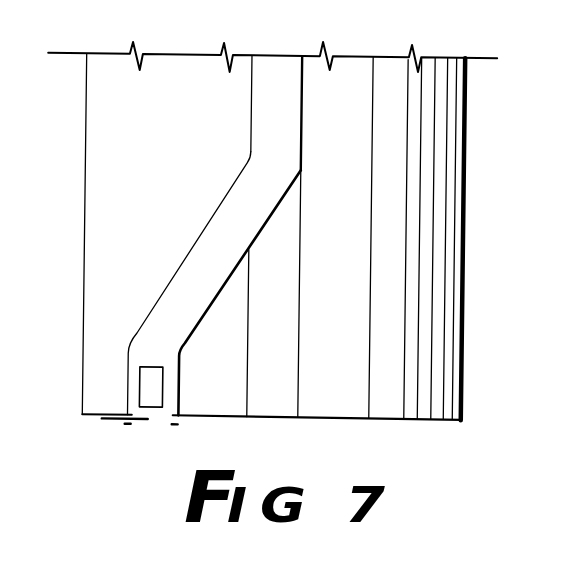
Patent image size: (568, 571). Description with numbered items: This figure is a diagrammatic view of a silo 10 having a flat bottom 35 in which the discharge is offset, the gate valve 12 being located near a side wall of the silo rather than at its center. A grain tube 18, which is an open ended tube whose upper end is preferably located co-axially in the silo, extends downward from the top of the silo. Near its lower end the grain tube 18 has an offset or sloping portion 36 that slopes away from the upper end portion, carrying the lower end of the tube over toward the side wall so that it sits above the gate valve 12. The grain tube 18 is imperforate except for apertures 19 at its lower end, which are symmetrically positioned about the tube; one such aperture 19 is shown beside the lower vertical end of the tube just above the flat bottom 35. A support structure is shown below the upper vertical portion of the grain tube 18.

The silo 10 is at (464, 175).
The gate valve 12 is at (155, 424).
The grain tube 18 is at (291, 123).
The apertures 19 is at (155, 390).
The flat bottom 35 is at (354, 422).
The offset or sloping portion 36 is at (204, 294).